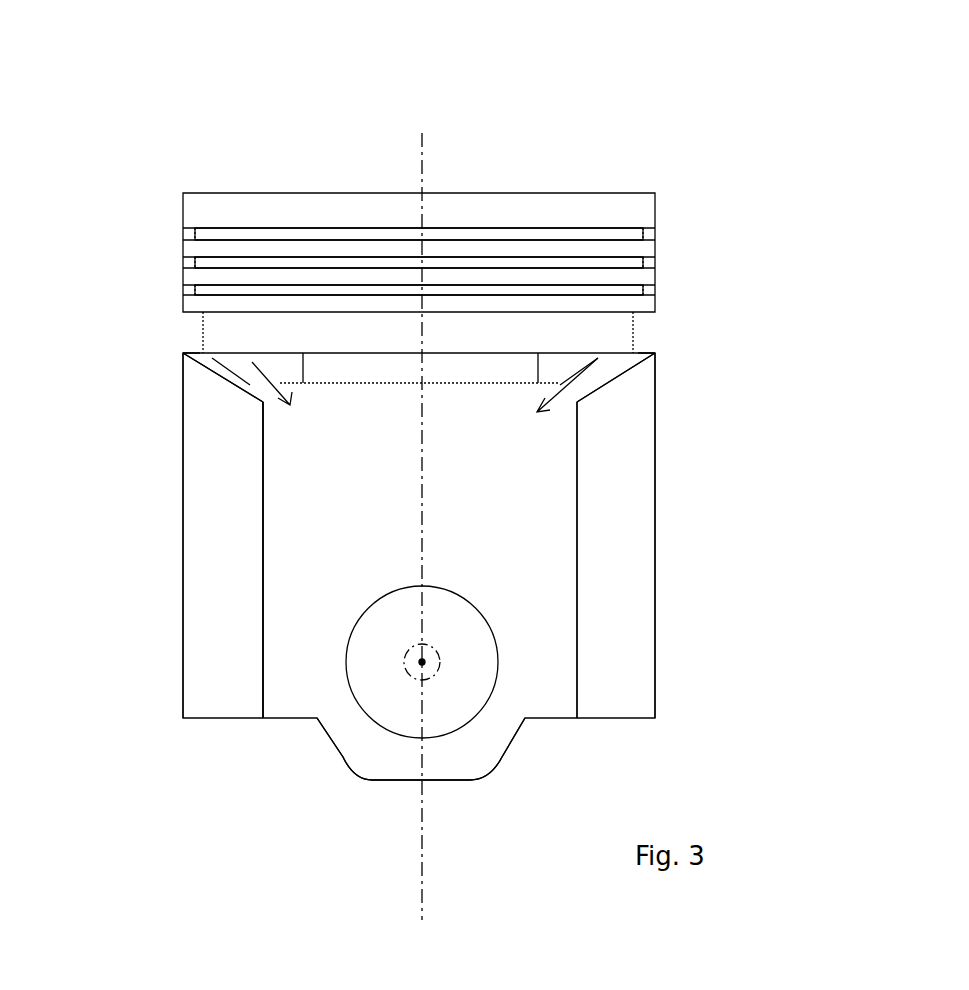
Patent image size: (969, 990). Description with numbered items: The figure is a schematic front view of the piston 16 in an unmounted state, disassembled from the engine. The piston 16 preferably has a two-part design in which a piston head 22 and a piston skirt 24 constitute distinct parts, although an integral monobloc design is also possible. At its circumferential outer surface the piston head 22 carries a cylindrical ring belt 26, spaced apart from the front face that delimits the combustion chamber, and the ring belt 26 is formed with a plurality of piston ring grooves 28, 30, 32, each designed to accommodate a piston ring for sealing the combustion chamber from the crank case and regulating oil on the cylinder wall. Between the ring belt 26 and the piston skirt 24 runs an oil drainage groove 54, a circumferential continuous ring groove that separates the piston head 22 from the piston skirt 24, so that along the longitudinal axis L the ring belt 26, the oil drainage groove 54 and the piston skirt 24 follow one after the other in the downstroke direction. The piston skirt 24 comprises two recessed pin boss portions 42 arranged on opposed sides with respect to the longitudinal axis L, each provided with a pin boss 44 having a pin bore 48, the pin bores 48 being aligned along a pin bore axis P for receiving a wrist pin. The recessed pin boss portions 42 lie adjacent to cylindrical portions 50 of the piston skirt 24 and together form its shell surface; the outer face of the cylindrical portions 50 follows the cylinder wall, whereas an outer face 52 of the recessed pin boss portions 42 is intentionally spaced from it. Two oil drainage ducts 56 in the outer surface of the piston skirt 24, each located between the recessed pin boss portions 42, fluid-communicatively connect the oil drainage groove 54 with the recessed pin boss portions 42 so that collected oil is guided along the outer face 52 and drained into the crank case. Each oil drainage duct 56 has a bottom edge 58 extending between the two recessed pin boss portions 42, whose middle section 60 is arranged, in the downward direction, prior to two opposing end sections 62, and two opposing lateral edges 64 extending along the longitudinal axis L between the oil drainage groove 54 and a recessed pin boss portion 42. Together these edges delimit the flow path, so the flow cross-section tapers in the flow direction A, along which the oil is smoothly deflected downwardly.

The piston 16 is at (576, 92).
The piston head 22 is at (622, 183).
The piston skirt 24 is at (665, 499).
The ring belt 26 is at (153, 255).
The piston ring groove 28 is at (652, 235).
The piston ring groove 30 is at (650, 263).
The piston ring groove 32 is at (650, 290).
The recessed pin boss portion 42 is at (292, 694).
The pin boss 44 is at (480, 603).
The pin bore 48 is at (494, 668).
The cylindrical portion 50 is at (218, 593).
The outer face 52 is at (280, 648).
The oil drainage groove 54 is at (163, 312).
The oil drainage duct 56 is at (229, 357).
The bottom edge 58 is at (226, 387).
The middle section 60 is at (183, 353).
The end section 62 is at (252, 407).
The lateral edge 64 is at (308, 365).
The flow direction A is at (268, 370).
The longitudinal axis L is at (422, 157).
The pin bore axis P is at (422, 664).